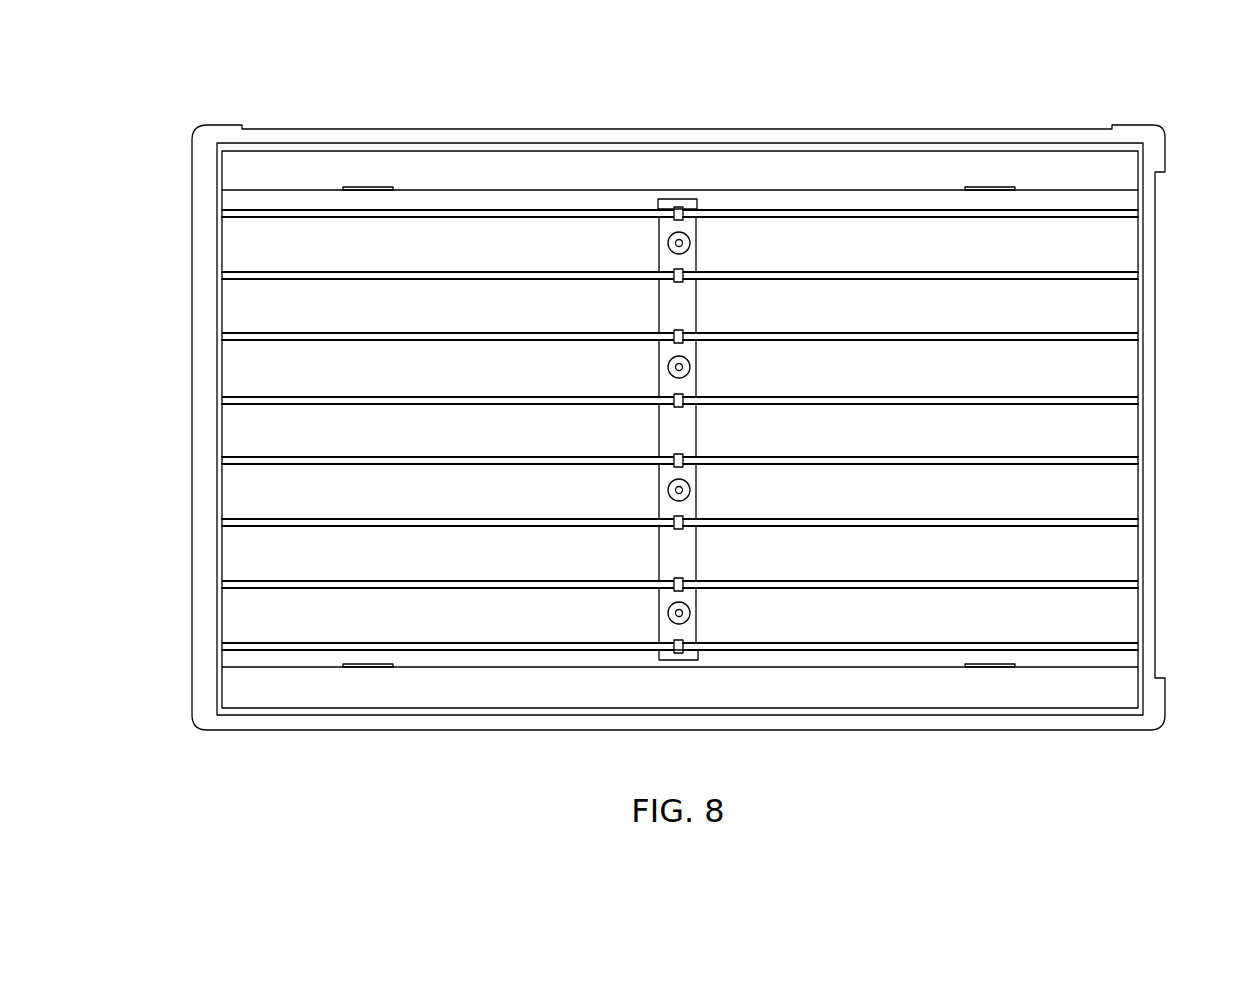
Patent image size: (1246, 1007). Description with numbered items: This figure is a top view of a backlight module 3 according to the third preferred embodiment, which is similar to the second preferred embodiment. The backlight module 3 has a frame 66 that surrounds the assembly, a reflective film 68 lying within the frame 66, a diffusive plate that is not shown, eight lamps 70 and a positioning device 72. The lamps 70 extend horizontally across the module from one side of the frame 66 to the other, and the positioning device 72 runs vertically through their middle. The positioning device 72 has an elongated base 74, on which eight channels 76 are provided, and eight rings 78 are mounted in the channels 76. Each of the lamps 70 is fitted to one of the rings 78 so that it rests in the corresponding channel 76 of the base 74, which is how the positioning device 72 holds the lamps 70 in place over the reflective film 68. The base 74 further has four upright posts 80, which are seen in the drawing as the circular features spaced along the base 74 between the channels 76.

The backlight module 3 is at (1048, 101).
The frame 66 is at (1152, 205).
The reflective film 68 is at (910, 252).
The lamps 70 is at (282, 210).
The positioning device 72 is at (598, 316).
The elongated base 74 is at (665, 199).
The channels 76 is at (697, 190).
The rings 78 is at (681, 207).
The upright posts 80 is at (667, 362).